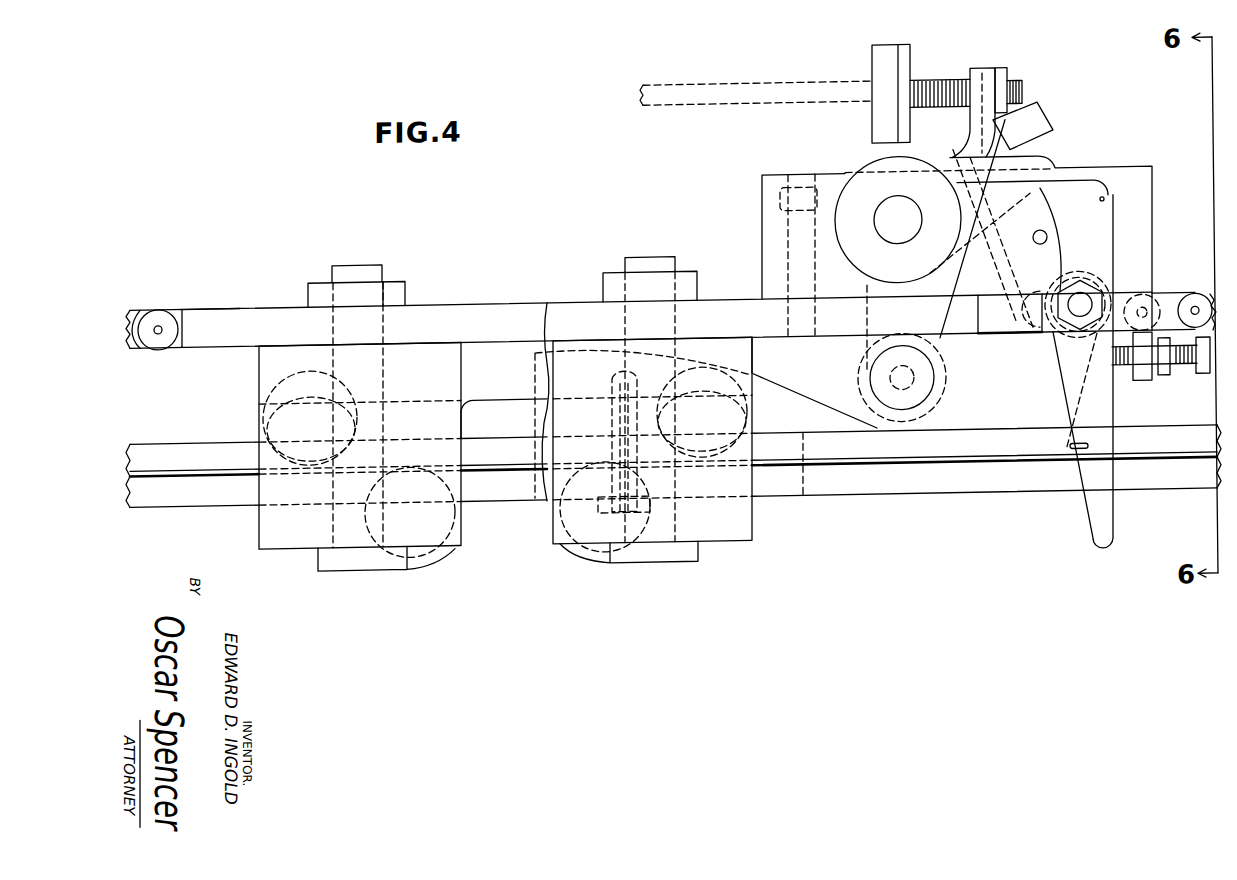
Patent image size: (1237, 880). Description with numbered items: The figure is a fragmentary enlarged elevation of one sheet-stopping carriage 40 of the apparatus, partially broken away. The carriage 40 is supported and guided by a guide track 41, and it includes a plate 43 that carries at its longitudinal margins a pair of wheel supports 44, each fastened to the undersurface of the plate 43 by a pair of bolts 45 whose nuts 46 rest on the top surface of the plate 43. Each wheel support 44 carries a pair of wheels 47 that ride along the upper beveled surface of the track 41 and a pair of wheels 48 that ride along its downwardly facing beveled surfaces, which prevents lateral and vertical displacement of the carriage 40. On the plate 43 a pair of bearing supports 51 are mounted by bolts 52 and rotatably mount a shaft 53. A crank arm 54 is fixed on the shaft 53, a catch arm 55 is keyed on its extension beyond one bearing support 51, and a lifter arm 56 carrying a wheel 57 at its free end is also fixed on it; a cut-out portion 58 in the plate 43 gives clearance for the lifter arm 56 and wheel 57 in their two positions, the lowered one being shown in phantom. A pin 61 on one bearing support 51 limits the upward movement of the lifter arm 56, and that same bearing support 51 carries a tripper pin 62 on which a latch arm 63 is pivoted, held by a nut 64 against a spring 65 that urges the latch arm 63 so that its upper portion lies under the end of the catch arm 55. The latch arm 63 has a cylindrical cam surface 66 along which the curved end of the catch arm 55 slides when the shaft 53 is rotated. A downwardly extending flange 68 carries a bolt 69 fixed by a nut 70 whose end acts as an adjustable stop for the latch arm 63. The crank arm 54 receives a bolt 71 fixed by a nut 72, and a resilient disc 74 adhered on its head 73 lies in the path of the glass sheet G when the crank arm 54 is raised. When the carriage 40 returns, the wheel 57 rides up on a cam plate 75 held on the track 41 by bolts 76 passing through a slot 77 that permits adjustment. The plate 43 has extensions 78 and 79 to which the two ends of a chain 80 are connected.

The carriage 40 is at (184, 294).
The guide track 41 is at (206, 436).
The plate 43 is at (452, 302).
The wheel support 44 is at (259, 380).
The bolt 45 is at (368, 261).
The nut 46 is at (393, 278).
The wheel 47 is at (350, 383).
The wheel 48 is at (557, 546).
The bearing support 51 is at (762, 200).
The bolt 52 is at (790, 190).
The shaft 53 is at (898, 220).
The crank arm 54 is at (983, 76).
The catch arm 55 is at (1050, 166).
The lifter arm 56 is at (958, 342).
The wheel 57 is at (943, 388).
The cut-out portion 58 is at (1010, 344).
The pin 61 is at (1040, 238).
The tripper pin 62 is at (1097, 296).
The latch arm 63 is at (1090, 541).
The nut 64 is at (1078, 342).
The spring 65 is at (1070, 452).
The cylindrical cam surface 66 is at (1102, 202).
The flange 68 is at (1145, 390).
The bolt 69 is at (1203, 384).
The nut 70 is at (1171, 385).
The bolt 71 is at (925, 114).
The nut 72 is at (1010, 82).
The head 73 is at (910, 66).
The disc 74 is at (872, 64).
The cam plate 75 is at (801, 401).
The bolt 76 is at (612, 385).
The slot 77 is at (805, 499).
The extension 78 is at (226, 340).
The extension 79 is at (1162, 304).
The chain 80 is at (130, 308).
The glass sheet G is at (724, 84).